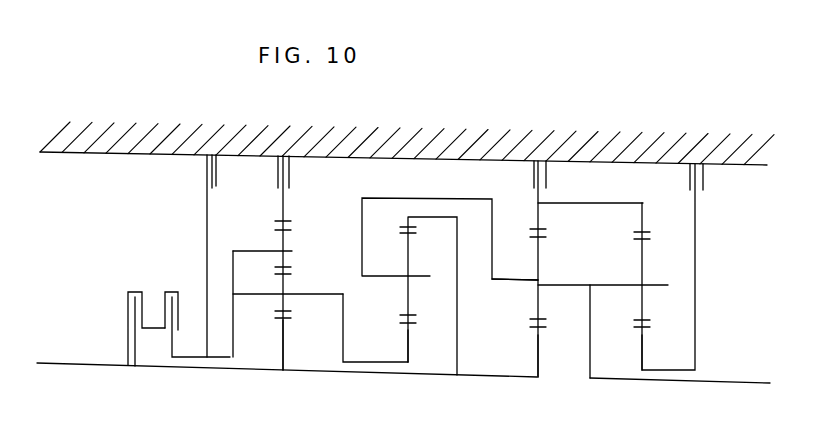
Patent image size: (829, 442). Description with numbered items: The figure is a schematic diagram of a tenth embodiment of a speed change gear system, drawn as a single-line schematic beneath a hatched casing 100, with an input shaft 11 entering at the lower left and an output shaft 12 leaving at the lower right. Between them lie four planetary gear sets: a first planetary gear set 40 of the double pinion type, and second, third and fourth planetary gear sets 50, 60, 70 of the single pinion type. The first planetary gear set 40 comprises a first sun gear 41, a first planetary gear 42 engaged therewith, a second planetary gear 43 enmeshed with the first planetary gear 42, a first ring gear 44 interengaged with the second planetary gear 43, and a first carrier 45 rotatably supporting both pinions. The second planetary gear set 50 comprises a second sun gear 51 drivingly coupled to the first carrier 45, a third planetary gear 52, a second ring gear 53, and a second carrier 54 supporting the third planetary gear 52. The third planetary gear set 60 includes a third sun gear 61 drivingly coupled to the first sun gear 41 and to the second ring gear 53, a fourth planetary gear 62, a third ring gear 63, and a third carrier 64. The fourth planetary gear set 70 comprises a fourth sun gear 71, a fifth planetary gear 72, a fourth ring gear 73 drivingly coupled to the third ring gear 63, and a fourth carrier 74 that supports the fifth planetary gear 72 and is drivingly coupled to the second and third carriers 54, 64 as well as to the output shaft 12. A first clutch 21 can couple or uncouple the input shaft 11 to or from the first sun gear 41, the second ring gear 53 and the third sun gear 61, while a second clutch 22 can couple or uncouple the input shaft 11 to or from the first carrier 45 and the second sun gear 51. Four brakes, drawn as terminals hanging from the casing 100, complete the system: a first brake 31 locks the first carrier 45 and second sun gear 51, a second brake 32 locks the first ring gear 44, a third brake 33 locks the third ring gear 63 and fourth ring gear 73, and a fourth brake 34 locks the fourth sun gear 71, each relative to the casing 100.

The casing 100 is at (468, 158).
The input shaft 11 is at (77, 366).
The output shaft 12 is at (678, 382).
The first clutch 21 is at (134, 289).
The second clutch 22 is at (173, 289).
The first brake 31 is at (201, 160).
The second brake 32 is at (276, 163).
The third brake 33 is at (548, 177).
The fourth brake 34 is at (705, 179).
The first planetary gear set 40 is at (288, 348).
The first sun gear 41 is at (281, 341).
The first planetary gear 42 is at (284, 304).
The second planetary gear 43 is at (285, 263).
The first ring gear 44 is at (284, 208).
The first carrier 45 is at (262, 237).
The second planetary gear set 50 is at (411, 352).
The second sun gear 51 is at (409, 330).
The third planetary gear 52 is at (409, 297).
The second ring gear 53 is at (415, 222).
The second carrier 54 is at (450, 239).
The third planetary gear set 60 is at (541, 365).
The third sun gear 61 is at (538, 355).
The fourth planetary gear 62 is at (538, 297).
The third ring gear 63 is at (539, 212).
The third carrier 64 is at (515, 267).
The fourth planetary gear set 70 is at (638, 353).
The fourth sun gear 71 is at (661, 352).
The fifth planetary gear 72 is at (642, 300).
The fourth ring gear 73 is at (645, 212).
The fourth carrier 74 is at (603, 269).